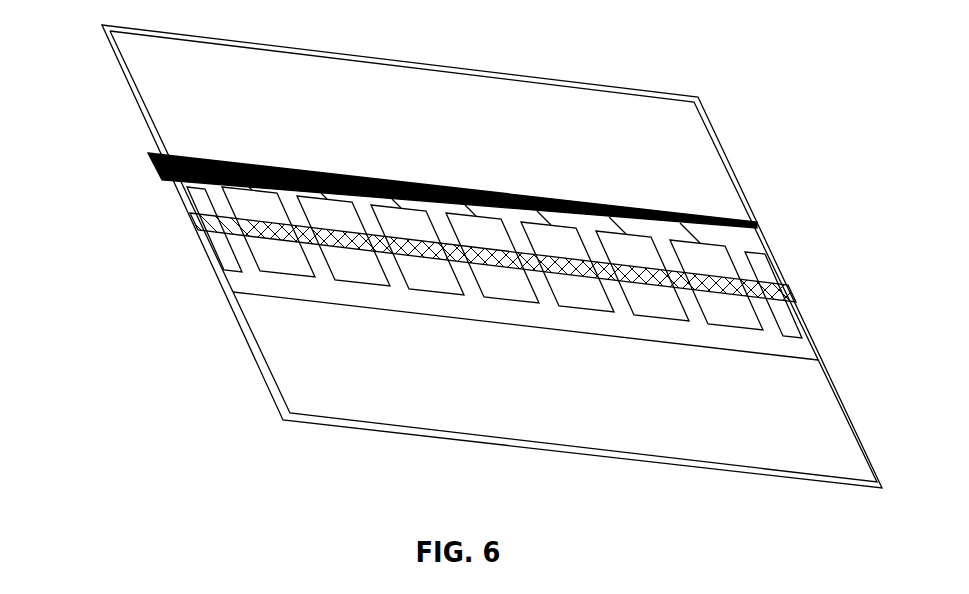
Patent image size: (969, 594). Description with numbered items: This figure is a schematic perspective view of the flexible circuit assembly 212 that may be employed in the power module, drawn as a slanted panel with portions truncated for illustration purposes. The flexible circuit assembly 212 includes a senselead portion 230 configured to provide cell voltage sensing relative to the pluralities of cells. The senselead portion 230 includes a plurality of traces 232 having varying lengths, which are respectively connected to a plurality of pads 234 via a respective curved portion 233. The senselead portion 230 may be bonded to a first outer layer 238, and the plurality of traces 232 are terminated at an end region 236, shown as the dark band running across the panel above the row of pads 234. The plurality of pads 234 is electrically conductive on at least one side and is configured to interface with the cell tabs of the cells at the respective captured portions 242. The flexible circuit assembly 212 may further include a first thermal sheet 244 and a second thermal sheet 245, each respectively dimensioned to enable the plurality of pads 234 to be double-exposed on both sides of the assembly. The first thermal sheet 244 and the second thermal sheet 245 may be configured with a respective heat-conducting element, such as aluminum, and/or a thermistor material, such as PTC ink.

The flexible circuit assembly 212 is at (749, 160).
The senselead portion 230 is at (597, 186).
The traces 232 is at (635, 217).
The curved portion 233 is at (543, 212).
The pads 234 is at (583, 312).
The end region 236 is at (130, 157).
The first outer layer 238 is at (217, 277).
The captured portions 242 is at (647, 288).
The first thermal sheet 244 is at (130, 88).
The second thermal sheet 245 is at (253, 355).